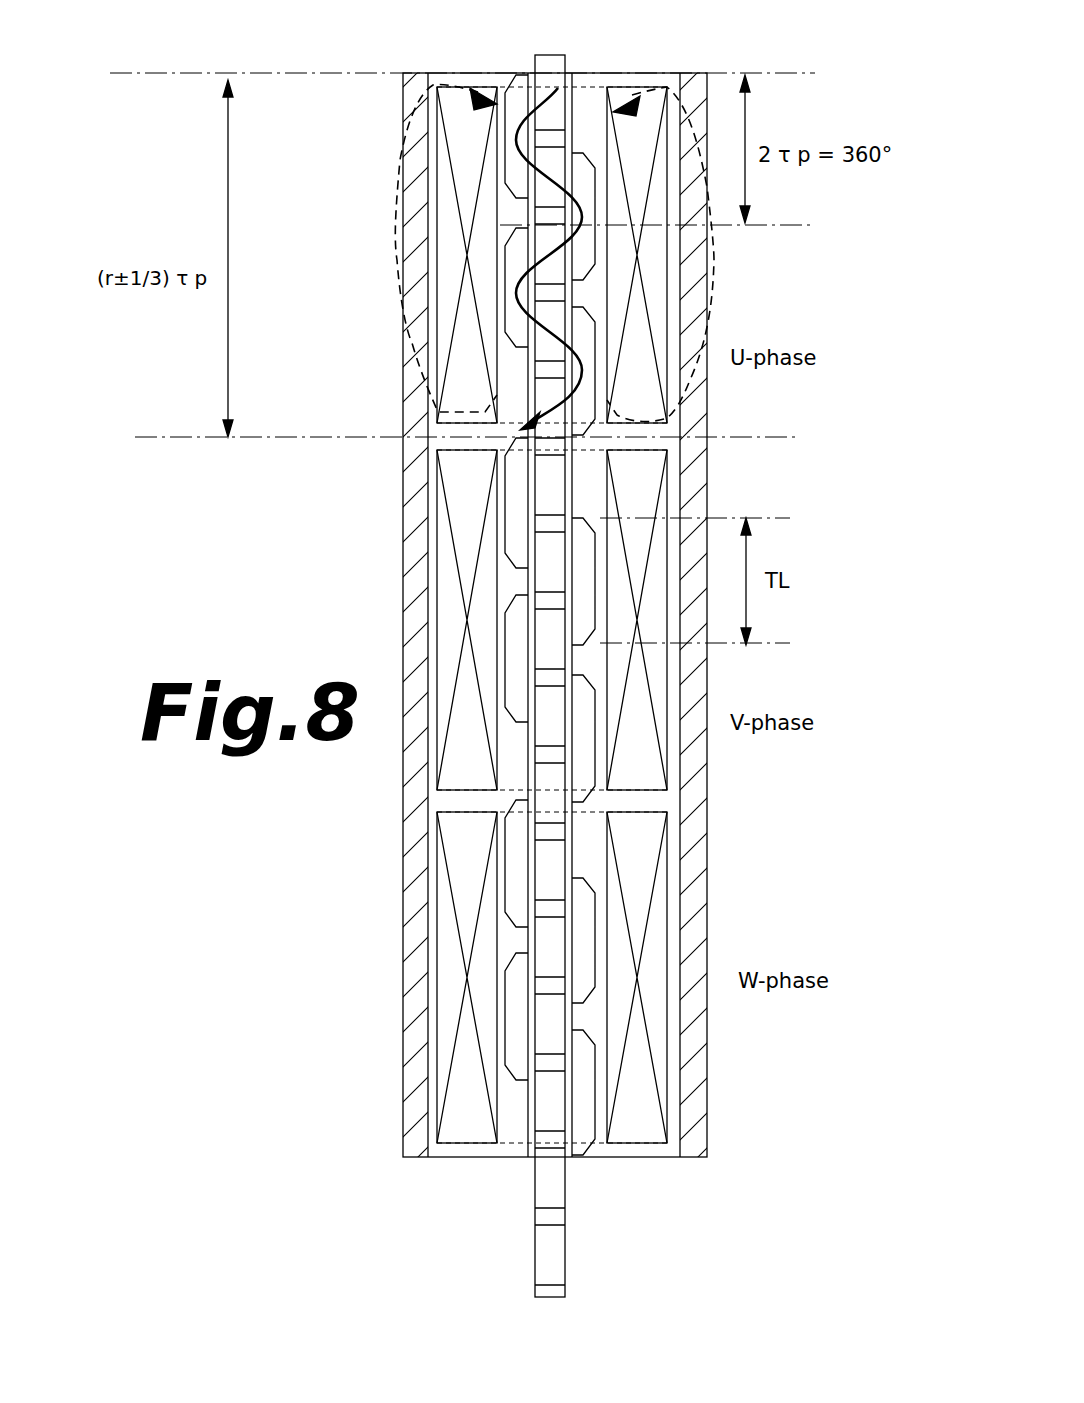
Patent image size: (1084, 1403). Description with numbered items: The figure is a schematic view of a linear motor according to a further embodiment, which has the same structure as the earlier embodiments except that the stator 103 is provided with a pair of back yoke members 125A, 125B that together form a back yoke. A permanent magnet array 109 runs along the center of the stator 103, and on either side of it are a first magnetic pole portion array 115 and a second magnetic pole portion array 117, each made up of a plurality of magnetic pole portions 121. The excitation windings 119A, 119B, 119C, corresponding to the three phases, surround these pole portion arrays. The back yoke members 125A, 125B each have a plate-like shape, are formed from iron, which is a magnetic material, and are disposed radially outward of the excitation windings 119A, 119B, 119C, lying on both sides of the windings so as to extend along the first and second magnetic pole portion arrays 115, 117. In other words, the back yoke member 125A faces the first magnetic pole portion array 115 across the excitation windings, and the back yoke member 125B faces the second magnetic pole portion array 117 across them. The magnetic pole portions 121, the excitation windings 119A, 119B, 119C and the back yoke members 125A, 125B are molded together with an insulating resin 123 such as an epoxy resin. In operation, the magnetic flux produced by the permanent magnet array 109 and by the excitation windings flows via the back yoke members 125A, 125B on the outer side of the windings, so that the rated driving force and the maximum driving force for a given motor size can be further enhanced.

The stator 103 is at (400, 52).
The permanent magnet array 109 is at (562, 277).
The first magnetic pole portion array 115 is at (515, 228).
The second magnetic pole portion array 117 is at (603, 309).
The excitation winding 119A is at (440, 256).
The excitation winding 119B is at (433, 532).
The excitation winding 119C is at (433, 939).
The magnetic pole portion 121 is at (520, 100).
The insulating resin 123 is at (588, 497).
The back yoke member 125A is at (403, 355).
The back yoke member 125B is at (700, 400).